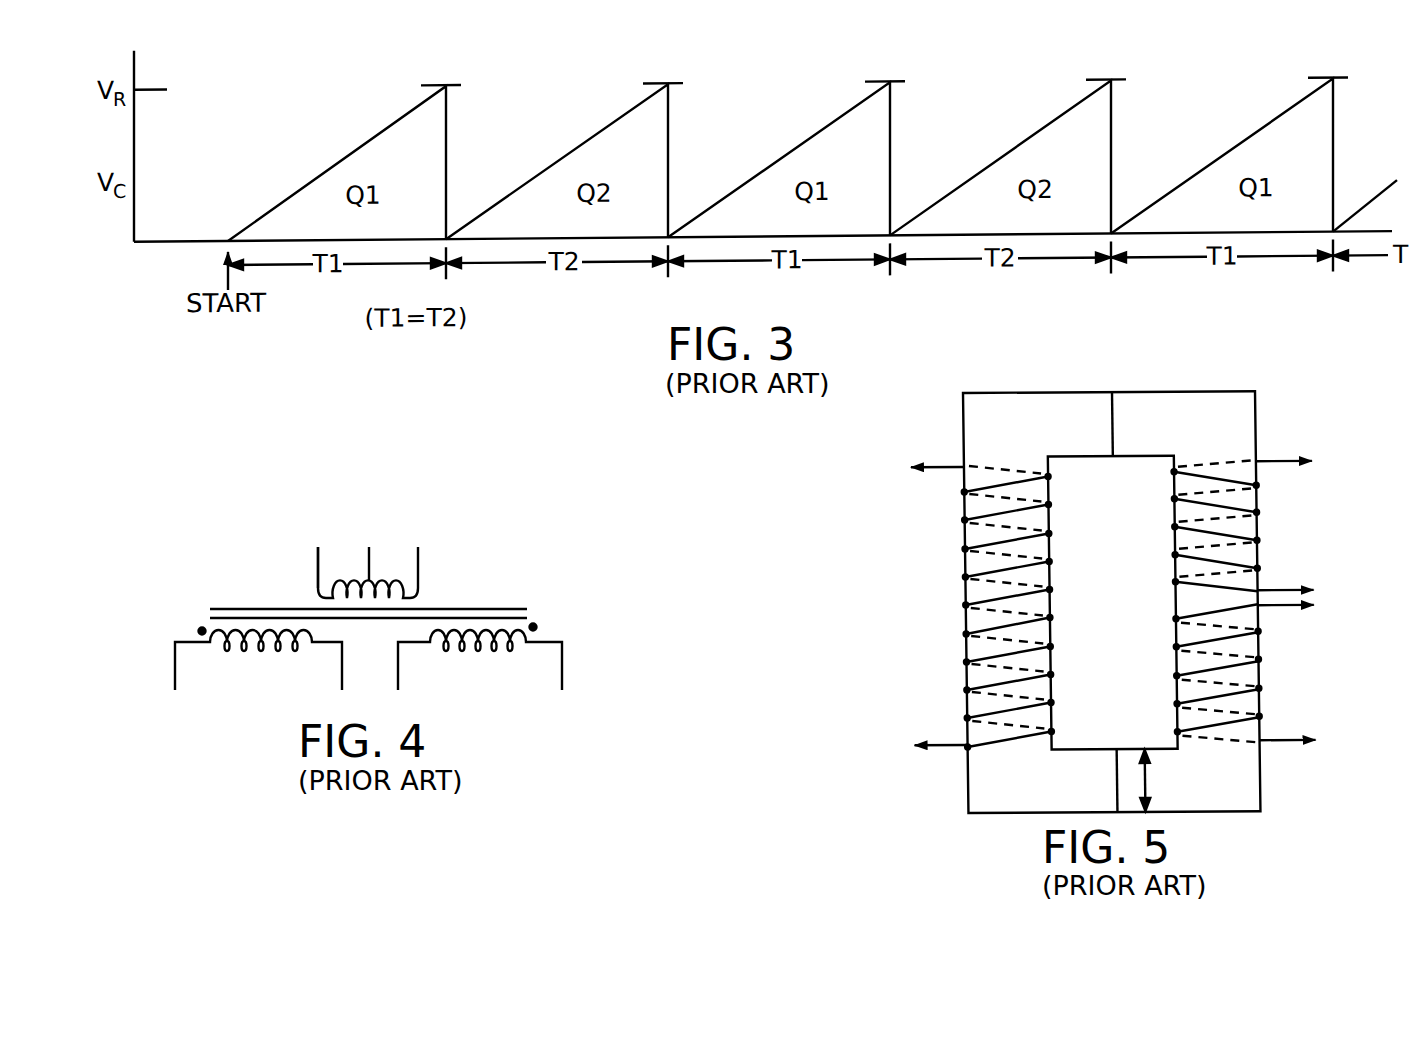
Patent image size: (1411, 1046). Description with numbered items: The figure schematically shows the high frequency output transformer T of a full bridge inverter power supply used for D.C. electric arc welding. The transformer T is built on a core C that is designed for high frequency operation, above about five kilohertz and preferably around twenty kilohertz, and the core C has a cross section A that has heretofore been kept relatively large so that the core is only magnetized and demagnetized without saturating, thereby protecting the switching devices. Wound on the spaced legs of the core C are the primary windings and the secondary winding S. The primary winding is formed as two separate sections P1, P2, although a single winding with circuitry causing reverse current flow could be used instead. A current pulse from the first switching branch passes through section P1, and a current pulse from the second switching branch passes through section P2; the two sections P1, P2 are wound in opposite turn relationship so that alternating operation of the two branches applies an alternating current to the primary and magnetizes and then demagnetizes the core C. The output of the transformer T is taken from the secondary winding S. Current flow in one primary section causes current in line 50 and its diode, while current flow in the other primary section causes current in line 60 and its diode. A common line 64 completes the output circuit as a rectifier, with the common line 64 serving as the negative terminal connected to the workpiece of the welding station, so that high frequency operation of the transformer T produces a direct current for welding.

In FIG. 4, the line 50 is at (421, 558).
In FIG. 4, the line 60 is at (317, 566).
In FIG. 4, the common line 64 is at (367, 562).
In FIG. 4, the transformer T is at (368, 589).
In FIG. 4, the core C is at (505, 605).
In FIG. 5, the core C is at (1240, 392).
In FIG. 4, the secondary winding S is at (372, 543).
In FIG. 5, the secondary winding S is at (982, 607).
In FIG. 4, the primary winding section P1 is at (258, 659).
In FIG. 5, the primary winding section P1 is at (1242, 526).
In FIG. 4, the primary winding section P2 is at (480, 657).
In FIG. 5, the primary winding section P2 is at (1244, 673).
In FIG. 5, the cross section A is at (1156, 780).